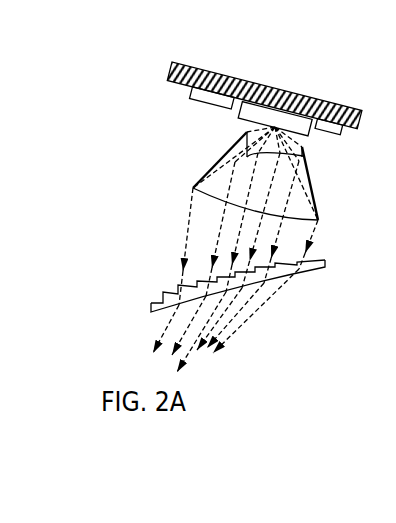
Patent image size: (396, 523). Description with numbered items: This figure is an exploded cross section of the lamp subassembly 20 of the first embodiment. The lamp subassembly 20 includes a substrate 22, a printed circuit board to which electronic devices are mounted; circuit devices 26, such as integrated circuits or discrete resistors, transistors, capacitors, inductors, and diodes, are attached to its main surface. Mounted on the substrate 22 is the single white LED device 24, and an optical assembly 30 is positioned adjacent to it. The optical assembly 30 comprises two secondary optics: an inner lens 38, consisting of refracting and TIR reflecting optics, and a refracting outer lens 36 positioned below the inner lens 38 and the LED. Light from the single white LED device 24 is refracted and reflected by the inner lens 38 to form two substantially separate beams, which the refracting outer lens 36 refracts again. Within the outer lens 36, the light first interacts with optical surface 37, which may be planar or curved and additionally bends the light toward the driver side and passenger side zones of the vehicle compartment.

The lamp subassembly 20 is at (82, 52).
The substrate 22 is at (203, 69).
The single white LED device 24 is at (305, 152).
The circuit devices 26 is at (208, 103).
The optical assembly 30 is at (236, 125).
The refracting outer lens 36 is at (247, 283).
The optical surface 37 is at (165, 291).
The inner lens 38 is at (236, 131).